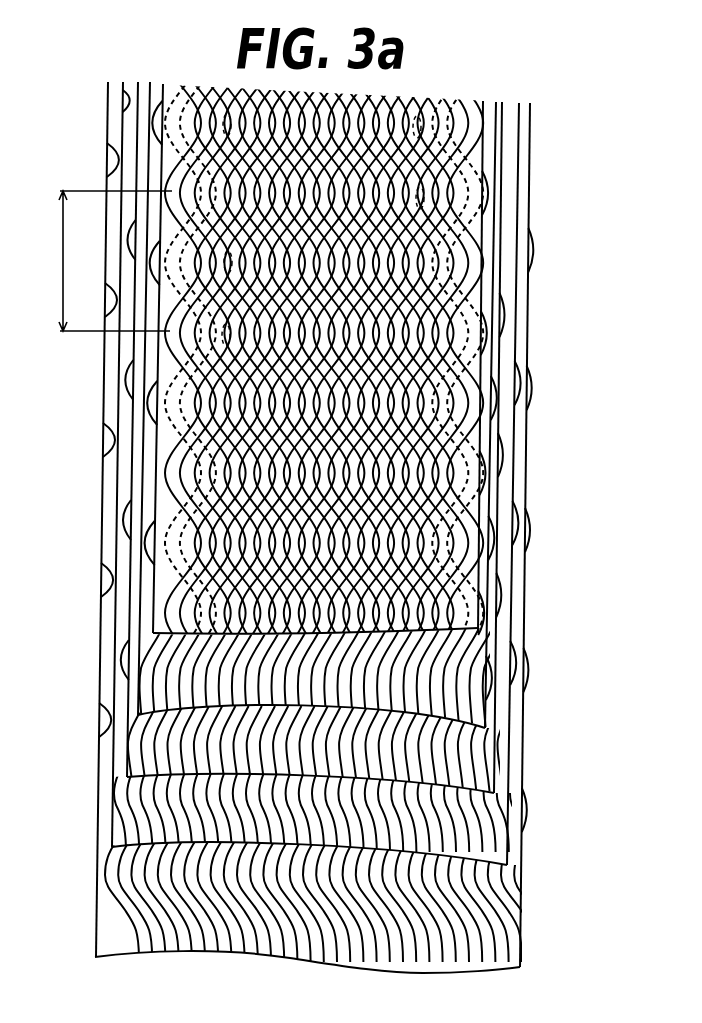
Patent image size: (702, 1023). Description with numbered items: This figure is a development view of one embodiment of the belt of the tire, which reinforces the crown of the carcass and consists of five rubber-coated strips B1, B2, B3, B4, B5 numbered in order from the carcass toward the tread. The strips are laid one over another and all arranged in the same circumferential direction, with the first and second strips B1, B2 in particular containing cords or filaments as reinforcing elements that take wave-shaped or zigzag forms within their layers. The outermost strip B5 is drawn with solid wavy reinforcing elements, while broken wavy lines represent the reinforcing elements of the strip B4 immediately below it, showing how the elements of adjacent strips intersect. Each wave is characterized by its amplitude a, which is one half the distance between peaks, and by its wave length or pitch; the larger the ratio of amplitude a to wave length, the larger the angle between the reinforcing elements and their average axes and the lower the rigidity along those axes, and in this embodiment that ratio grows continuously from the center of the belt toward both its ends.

The first belt strip B1 is at (510, 918).
The second belt strip B2 is at (488, 833).
The third belt strip B3 is at (482, 765).
The fourth belt strip B4 is at (463, 701).
The fifth belt strip B5 is at (460, 593).
The amplitude a is at (185, 238).